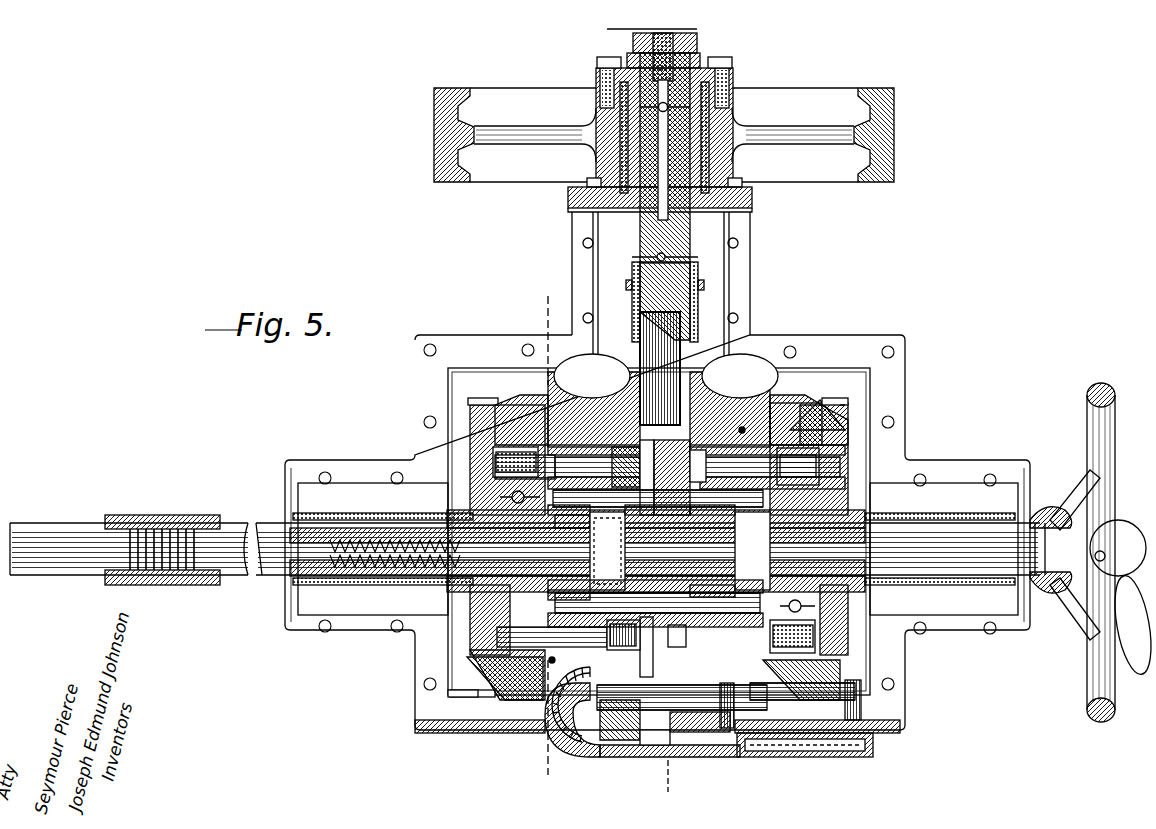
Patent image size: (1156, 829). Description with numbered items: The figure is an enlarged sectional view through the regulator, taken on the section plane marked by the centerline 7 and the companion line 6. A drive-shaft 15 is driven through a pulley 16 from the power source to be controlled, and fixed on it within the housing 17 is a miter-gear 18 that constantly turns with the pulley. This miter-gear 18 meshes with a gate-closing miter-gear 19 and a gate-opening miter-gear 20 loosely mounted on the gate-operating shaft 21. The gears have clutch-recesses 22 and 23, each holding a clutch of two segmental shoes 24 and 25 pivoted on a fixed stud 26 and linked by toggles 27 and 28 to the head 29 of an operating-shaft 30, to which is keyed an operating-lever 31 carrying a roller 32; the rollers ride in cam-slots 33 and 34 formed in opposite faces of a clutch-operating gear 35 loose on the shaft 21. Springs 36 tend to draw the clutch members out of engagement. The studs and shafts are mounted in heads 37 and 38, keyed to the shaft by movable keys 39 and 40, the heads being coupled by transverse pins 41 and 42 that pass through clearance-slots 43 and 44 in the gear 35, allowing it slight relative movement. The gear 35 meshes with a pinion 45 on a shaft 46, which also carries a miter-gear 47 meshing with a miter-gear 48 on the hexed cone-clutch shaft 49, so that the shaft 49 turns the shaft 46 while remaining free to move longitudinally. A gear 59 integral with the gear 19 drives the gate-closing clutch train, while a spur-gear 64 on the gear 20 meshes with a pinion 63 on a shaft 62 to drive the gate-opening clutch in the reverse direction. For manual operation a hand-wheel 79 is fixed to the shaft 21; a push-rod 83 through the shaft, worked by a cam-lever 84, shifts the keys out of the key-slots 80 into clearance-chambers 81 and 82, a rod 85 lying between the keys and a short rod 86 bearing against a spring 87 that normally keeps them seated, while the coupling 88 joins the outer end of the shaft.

The splined spindle shaft 6 is at (640, 332).
The section line 7 is at (548, 296).
The drive-shaft 15 is at (680, 338).
The pulley 16 is at (815, 95).
The housing 17 is at (818, 365).
The miter-gear 18 is at (742, 420).
The gate-closing miter-gear 19 is at (508, 405).
The gate-opening miter-gear 20 is at (815, 400).
The gate-operating shaft 21 is at (262, 514).
The clutch-recess 22 is at (490, 610).
The clutch-recess 23 is at (830, 610).
The segmental shoe 24 is at (838, 405).
The segmental shoe 25 is at (818, 405).
The fixed stud 26 is at (820, 468).
The toggle 27 is at (500, 436).
The toggle 28 is at (496, 484).
The head 29 is at (540, 450).
The operating-shaft 30 is at (575, 470).
The operating-lever 31 is at (618, 460).
The roller 32 is at (655, 450).
The cam-slot 33 is at (680, 648).
The cam-slot 34 is at (700, 452).
The clutch-operating gear 35 is at (628, 420).
The spring 36 is at (500, 497).
The head 37 is at (575, 420).
The head 38 is at (752, 470).
The movable key 39 is at (607, 551).
The movable key 40 is at (752, 551).
The transverse pin 41 is at (570, 512).
The transverse pin 42 is at (715, 592).
The clearance-slot 43 is at (675, 520).
The clearance-slot 44 is at (712, 560).
The pinion 45 is at (652, 745).
The shaft 46 is at (718, 712).
The miter-gear 47 is at (622, 740).
The miter-gear 48 is at (565, 740).
The cone-clutch shaft 49 is at (583, 745).
The gear 59 is at (474, 398).
The shaft 62 is at (730, 728).
The pinion 63 is at (828, 740).
The spur-gear 64 is at (845, 405).
The hand-wheel 79 is at (1088, 398).
The key-slot 80 is at (740, 428).
The clearance-chamber 81 is at (532, 690).
The clearance-chamber 82 is at (700, 732).
The push-rod 83 is at (978, 548).
The cam-lever 84 is at (1125, 575).
The rod 85 is at (607, 551).
The short rod 86 is at (585, 528).
The spring 87 is at (435, 578).
The coupling 88 is at (172, 580).